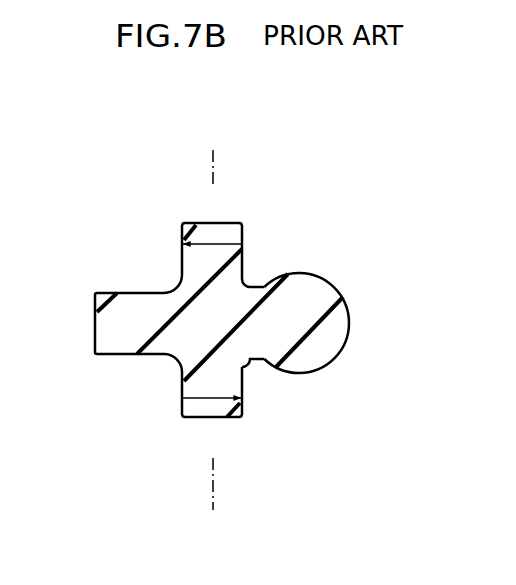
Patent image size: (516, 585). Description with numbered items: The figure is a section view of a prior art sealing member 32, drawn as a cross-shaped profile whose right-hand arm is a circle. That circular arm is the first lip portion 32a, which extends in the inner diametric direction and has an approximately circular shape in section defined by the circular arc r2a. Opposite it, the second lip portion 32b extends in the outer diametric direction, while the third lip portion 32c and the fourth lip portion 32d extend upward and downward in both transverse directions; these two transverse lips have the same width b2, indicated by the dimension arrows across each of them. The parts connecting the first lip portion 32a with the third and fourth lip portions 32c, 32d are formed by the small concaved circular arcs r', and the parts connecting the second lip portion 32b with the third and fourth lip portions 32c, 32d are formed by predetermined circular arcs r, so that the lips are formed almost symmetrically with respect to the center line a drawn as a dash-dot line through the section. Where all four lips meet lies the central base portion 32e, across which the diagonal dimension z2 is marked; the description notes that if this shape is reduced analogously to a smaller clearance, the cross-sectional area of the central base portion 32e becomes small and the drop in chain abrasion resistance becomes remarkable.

The sealing member 32 is at (122, 277).
The first lip portion 32a is at (308, 300).
The second lip portion 32b is at (97, 300).
The third lip portion 32c is at (240, 223).
The fourth lip portion 32d is at (230, 416).
The central base portion 32e is at (274, 362).
The width b2 is at (203, 243).
The diagonal dimension between fillets z2 is at (241, 351).
The predetermined circular arcs r is at (154, 324).
The concaved circular arcs r' is at (261, 325).
The circular arc r2a is at (349, 318).
The center line a is at (213, 333).